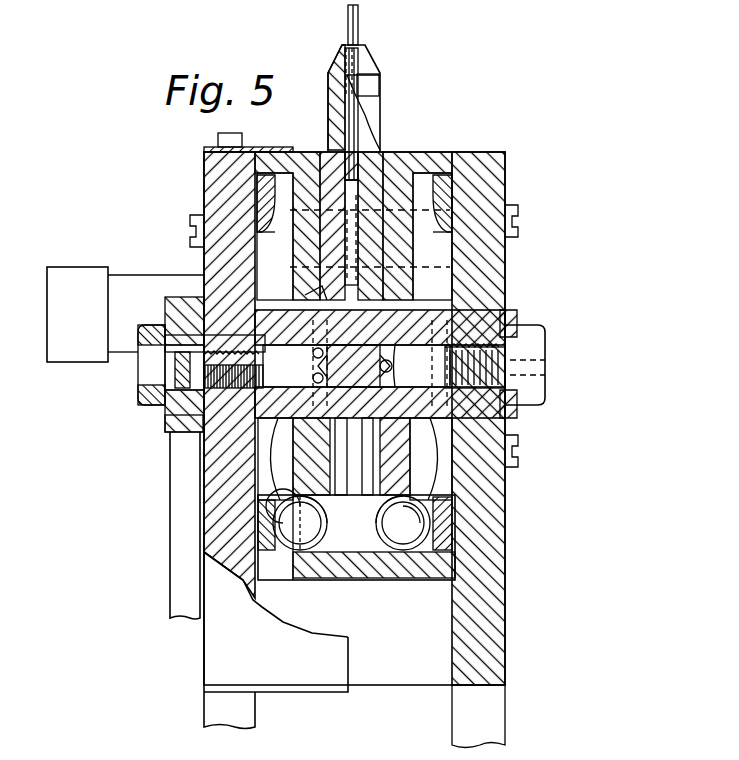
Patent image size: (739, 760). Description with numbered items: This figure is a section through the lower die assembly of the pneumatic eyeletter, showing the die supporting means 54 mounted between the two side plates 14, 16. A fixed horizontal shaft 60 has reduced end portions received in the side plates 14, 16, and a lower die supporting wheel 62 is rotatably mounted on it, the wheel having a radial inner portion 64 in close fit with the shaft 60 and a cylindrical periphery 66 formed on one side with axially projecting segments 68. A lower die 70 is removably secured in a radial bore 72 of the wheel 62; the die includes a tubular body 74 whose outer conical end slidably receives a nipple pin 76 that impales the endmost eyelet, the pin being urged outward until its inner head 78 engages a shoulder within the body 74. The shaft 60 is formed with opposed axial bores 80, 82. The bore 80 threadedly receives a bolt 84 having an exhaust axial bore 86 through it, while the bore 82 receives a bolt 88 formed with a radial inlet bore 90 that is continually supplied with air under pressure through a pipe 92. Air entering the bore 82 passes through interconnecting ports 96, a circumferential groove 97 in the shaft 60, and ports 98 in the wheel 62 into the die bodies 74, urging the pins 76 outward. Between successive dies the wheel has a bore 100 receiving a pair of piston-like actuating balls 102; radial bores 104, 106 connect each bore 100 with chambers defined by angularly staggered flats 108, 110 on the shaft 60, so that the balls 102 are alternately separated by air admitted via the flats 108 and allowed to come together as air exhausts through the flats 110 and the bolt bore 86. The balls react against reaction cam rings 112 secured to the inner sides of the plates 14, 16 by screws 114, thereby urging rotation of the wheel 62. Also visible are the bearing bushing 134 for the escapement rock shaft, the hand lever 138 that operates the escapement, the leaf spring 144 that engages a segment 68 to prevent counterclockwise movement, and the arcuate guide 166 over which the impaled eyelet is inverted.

The side plate 14 is at (204, 183).
The side plate 16 is at (505, 197).
The die supporting means 54 is at (452, 100).
The horizontal shaft 60 is at (500, 320).
The lower die supporting wheel 62 is at (380, 582).
The radial inner portion 64 is at (410, 285).
The cylindrical periphery 66 is at (432, 155).
The axially projecting segments 68 is at (270, 155).
The lower die 70 is at (372, 66).
The radial bore 72 is at (384, 158).
The tubular body 74 is at (368, 85).
The nipple pin 76 is at (358, 28).
The inner head 78 is at (345, 160).
The axial bore 80 is at (367, 366).
The axial bore 82 is at (337, 366).
The bolt 84 is at (538, 330).
The exhaust axial bore 86 is at (540, 360).
The bolt 88 is at (143, 398).
The radial inlet bore 90 is at (175, 372).
The pipe 92 is at (172, 495).
The interconnecting ports 96 is at (275, 459).
The circumferential groove 97 is at (305, 300).
The ports 98 is at (300, 285).
The bore 100 is at (325, 562).
The actuating balls 102 is at (287, 555).
The radial bore 104 is at (332, 496).
The radial bore 106 is at (378, 518).
The flats 108 is at (301, 355).
The flats 110 is at (407, 358).
The reaction cam rings 112 is at (248, 592).
The screws 114 is at (518, 232).
The bearing bushing 134 is at (140, 275).
The hand lever 138 is at (58, 356).
The leaf spring 144 is at (210, 148).
The arcuate guide 166 is at (319, 688).